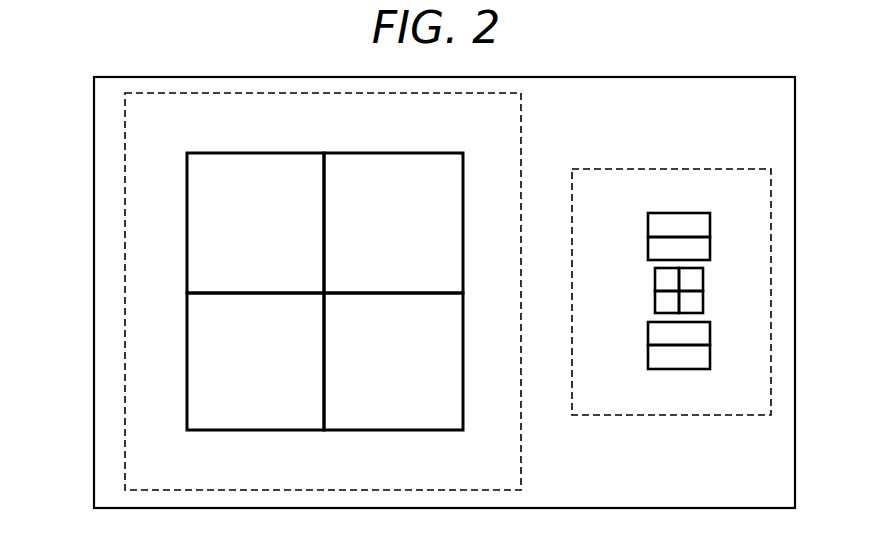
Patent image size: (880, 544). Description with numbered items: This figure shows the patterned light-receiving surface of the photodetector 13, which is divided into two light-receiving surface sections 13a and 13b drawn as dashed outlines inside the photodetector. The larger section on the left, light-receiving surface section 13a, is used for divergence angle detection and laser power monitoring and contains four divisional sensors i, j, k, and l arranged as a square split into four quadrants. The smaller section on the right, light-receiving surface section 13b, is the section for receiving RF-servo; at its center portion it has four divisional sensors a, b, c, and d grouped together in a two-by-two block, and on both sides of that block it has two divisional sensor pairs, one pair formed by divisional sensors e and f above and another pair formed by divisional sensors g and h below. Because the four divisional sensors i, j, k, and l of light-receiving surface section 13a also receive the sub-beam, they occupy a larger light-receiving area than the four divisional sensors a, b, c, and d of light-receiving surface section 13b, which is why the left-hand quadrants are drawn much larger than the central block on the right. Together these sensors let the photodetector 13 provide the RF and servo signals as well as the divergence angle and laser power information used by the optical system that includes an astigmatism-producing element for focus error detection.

The photodetector 13 is at (93, 452).
The light-receiving surface section 13a is at (357, 291).
The light-receiving surface section 13b is at (671, 264).
The divisional sensor a is at (655, 273).
The divisional sensor b is at (655, 300).
The divisional sensor c is at (703, 303).
The divisional sensor d is at (703, 277).
The divisional sensor e is at (648, 216).
The divisional sensor f is at (648, 247).
The divisional sensor g is at (648, 331).
The divisional sensor h is at (648, 361).
The divisional sensor i is at (259, 168).
The divisional sensor j is at (257, 418).
The divisional sensor k is at (416, 418).
The divisional sensor l is at (418, 168).